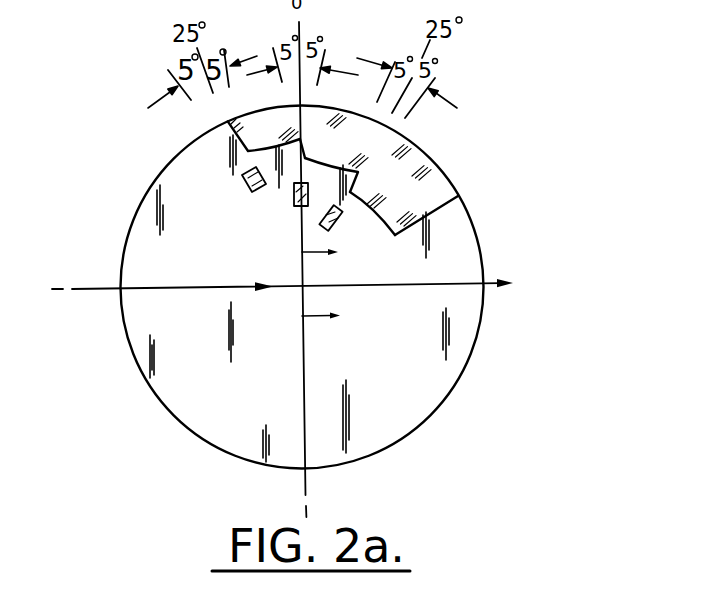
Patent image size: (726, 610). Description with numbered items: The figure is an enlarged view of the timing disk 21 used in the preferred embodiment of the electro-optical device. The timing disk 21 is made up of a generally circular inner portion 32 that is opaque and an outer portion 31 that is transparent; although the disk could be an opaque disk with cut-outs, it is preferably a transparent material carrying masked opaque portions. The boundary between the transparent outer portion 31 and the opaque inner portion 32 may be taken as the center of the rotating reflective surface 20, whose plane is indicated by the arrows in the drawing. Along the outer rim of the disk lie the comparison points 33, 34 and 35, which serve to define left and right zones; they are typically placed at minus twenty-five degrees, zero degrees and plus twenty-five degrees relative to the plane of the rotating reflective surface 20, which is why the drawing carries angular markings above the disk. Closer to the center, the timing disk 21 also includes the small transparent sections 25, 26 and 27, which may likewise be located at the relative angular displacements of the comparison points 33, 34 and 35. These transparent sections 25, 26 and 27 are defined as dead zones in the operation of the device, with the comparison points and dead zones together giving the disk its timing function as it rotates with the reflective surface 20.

The rotating reflective surface 20 is at (690, 327).
The timing disk 21 is at (127, 339).
The transparent section 25 is at (245, 186).
The transparent section 26 is at (294, 206).
The transparent section 27 is at (341, 226).
The outer portion 31 is at (437, 207).
The inner circular portion 32 is at (378, 348).
The comparison point 33 is at (247, 141).
The comparison point 34 is at (312, 158).
The comparison point 35 is at (352, 191).